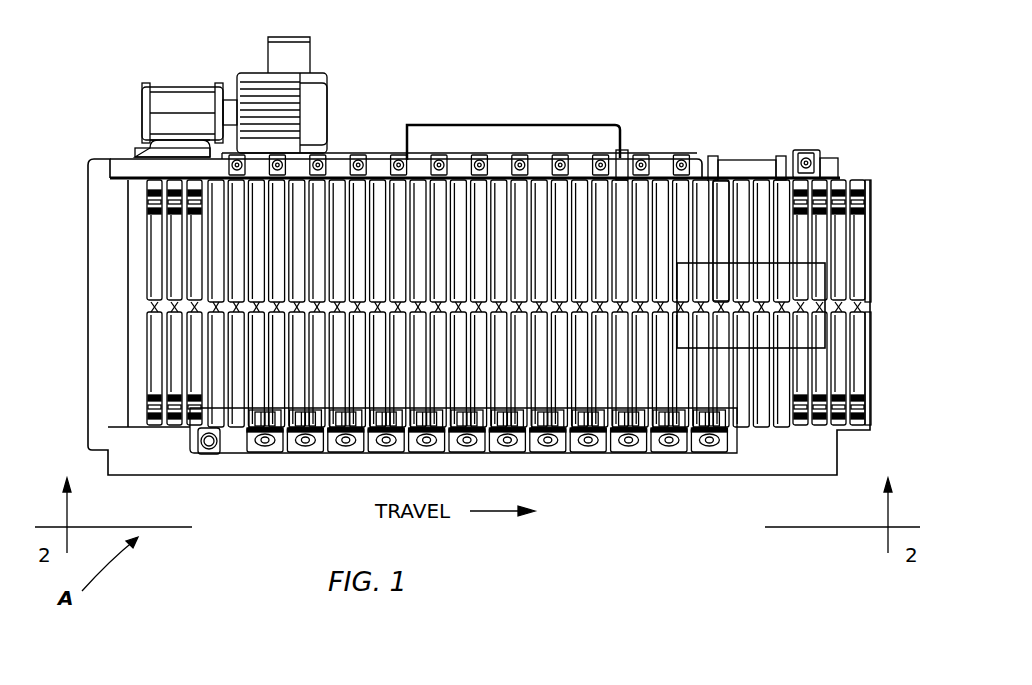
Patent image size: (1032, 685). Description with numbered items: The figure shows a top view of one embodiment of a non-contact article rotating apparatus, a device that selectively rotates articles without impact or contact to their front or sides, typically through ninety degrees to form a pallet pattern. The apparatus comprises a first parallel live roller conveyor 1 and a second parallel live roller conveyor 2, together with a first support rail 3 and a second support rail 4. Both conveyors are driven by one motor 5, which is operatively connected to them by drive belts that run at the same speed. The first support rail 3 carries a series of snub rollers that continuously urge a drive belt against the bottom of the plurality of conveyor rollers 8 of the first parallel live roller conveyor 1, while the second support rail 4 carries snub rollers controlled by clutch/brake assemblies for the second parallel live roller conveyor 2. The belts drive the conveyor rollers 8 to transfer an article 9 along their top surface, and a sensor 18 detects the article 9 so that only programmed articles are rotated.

The first parallel live roller conveyor 1 is at (479, 295).
The second parallel live roller conveyor 2 is at (610, 345).
The first support rail 3 is at (384, 166).
The second support rail 4 is at (232, 440).
The motor 5 is at (170, 90).
The conveyor rollers 8 is at (708, 224).
The article 9 is at (825, 282).
The sensor 18 is at (522, 166).